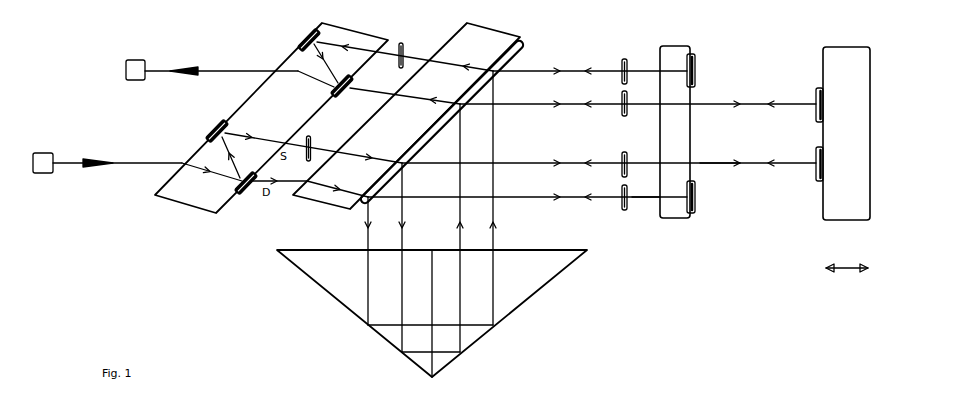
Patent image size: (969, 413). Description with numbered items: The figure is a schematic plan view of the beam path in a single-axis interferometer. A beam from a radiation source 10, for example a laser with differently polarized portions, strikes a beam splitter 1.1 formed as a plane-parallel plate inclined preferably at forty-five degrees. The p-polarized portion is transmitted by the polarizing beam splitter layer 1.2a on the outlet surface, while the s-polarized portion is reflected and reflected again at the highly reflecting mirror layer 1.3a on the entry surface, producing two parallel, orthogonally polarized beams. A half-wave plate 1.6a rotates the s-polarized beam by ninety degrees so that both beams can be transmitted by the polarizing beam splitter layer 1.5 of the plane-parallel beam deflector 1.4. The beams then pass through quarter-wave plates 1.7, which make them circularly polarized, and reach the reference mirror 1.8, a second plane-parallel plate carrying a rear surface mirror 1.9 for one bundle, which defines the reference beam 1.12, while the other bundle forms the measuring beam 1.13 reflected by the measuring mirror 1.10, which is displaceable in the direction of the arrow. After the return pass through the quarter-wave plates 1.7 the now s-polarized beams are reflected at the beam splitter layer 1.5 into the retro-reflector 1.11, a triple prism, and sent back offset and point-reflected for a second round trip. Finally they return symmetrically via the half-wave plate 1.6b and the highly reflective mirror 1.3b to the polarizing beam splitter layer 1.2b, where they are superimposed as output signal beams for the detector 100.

The radiation source 10 is at (43, 171).
The detector 100 is at (133, 62).
The beam splitter 1.1 is at (197, 187).
The polarizing beam splitter layer 1.2a is at (240, 191).
The polarizing beam splitter layer 1.2b is at (333, 95).
The highly reflecting mirror layer 1.3a is at (206, 138).
The highly reflective mirror 1.3b is at (298, 47).
The beam deflector 1.4 is at (310, 197).
The polarizing beam splitter layer 1.5 is at (524, 54).
The half-wave plate 1.6a is at (308, 135).
The half-wave plate 1.6b is at (400, 42).
The quarter-wave plates 1.7 is at (622, 186).
The reference mirror 1.8 is at (670, 211).
The rear surface mirror 1.9 is at (696, 200).
The measuring mirror 1.10 is at (826, 221).
The retro-reflector 1.11 is at (537, 272).
The reference beam 1.12 is at (640, 198).
The measuring beam 1.13 is at (718, 163).